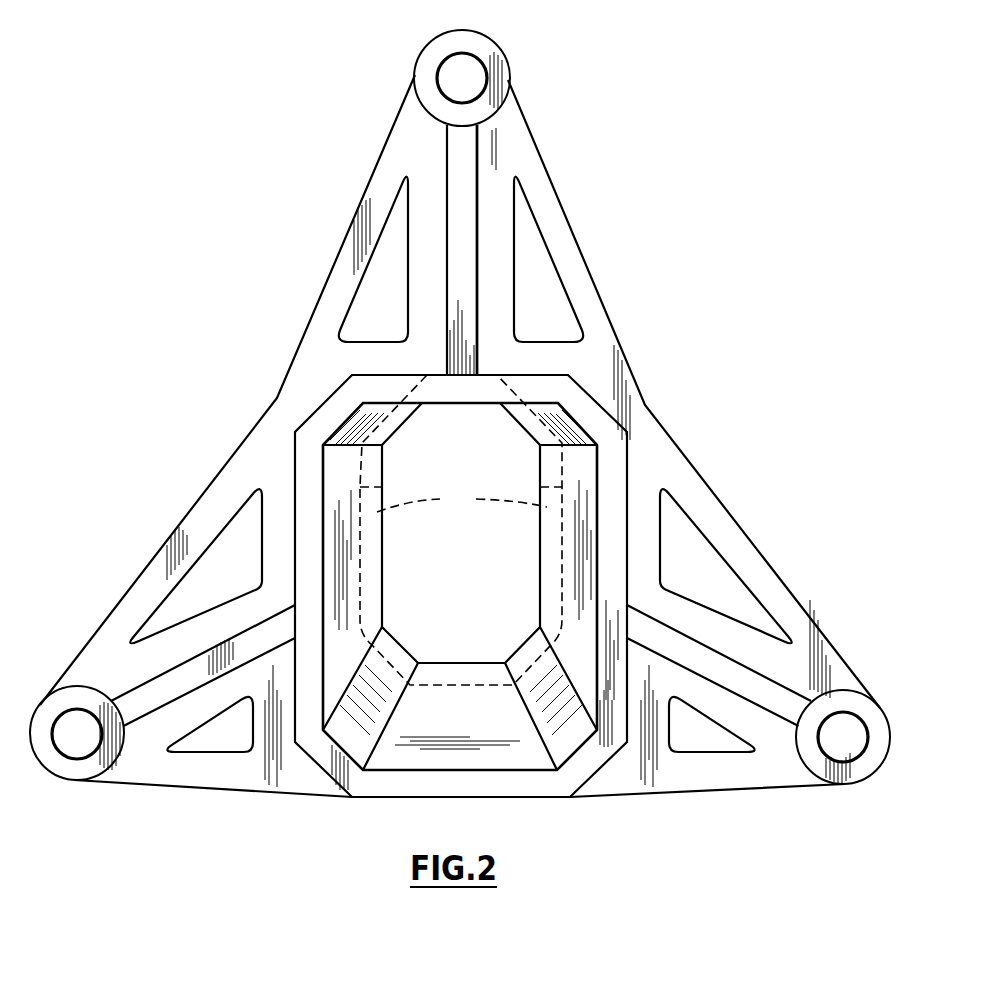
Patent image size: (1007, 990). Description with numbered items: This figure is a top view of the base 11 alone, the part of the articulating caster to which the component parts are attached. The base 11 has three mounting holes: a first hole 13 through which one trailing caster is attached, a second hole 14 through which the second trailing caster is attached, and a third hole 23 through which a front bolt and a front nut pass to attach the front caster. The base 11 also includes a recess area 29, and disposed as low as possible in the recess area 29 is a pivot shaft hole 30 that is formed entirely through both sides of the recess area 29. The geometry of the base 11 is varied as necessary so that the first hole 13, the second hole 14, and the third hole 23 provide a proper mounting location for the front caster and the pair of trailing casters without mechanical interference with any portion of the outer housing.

The base 11 is at (619, 333).
The first hole 13 is at (862, 757).
The second hole 14 is at (53, 755).
The third hole 23 is at (478, 58).
The recess area 29 is at (455, 636).
The pivot shaft hole 30 is at (461, 530).